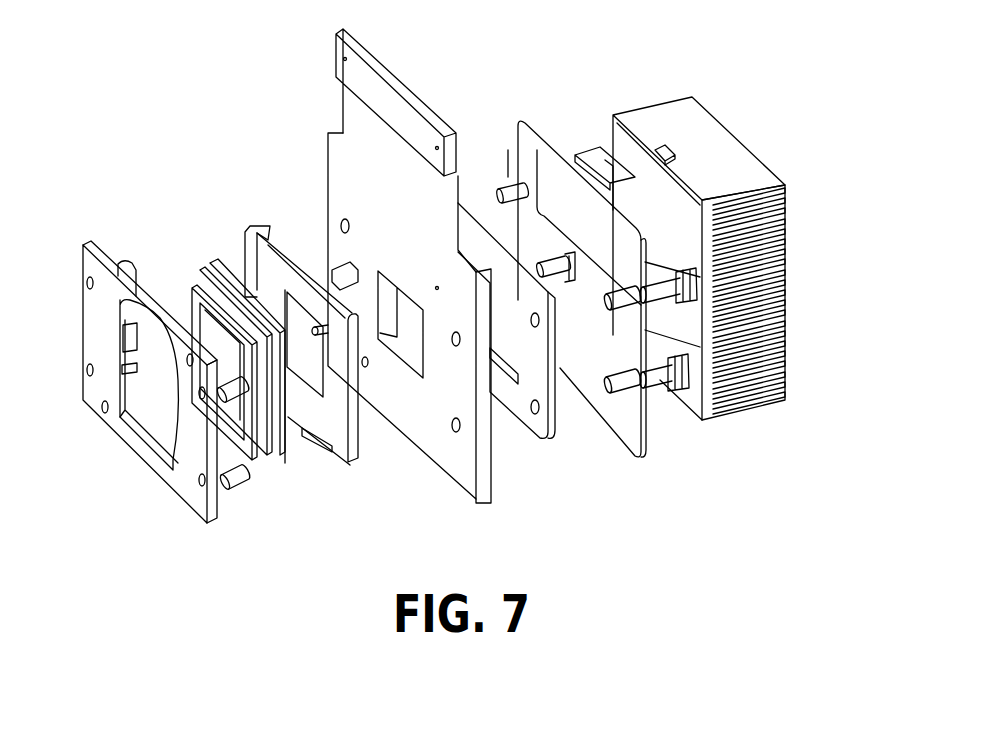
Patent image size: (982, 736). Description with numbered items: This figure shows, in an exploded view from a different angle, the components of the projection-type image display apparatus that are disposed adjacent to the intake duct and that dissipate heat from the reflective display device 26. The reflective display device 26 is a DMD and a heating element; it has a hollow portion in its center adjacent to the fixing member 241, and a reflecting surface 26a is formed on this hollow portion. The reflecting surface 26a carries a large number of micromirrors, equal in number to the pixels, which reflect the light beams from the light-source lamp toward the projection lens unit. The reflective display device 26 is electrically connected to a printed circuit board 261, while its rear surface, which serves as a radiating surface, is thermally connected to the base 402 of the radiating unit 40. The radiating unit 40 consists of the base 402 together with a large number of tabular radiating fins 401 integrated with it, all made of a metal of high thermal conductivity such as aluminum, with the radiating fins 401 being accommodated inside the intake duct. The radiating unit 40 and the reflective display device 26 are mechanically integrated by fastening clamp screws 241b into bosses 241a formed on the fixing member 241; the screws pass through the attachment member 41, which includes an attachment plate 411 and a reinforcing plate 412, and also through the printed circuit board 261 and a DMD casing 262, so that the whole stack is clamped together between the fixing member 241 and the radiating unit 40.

The radiating unit 40 is at (720, 210).
The radiating fins 401 is at (787, 205).
The base 402 is at (668, 260).
The attachment member 41 is at (560, 345).
The attachment plate 411 is at (550, 526).
The reinforcing plate 412 is at (540, 437).
The fixing member 241 is at (190, 507).
The bosses 241a is at (230, 487).
The clamp screws 241b is at (653, 380).
The reflective display device 26 is at (236, 366).
The reflecting surface 26a is at (232, 357).
The printed circuit board 261 is at (484, 503).
The DMD casing 262 is at (353, 467).